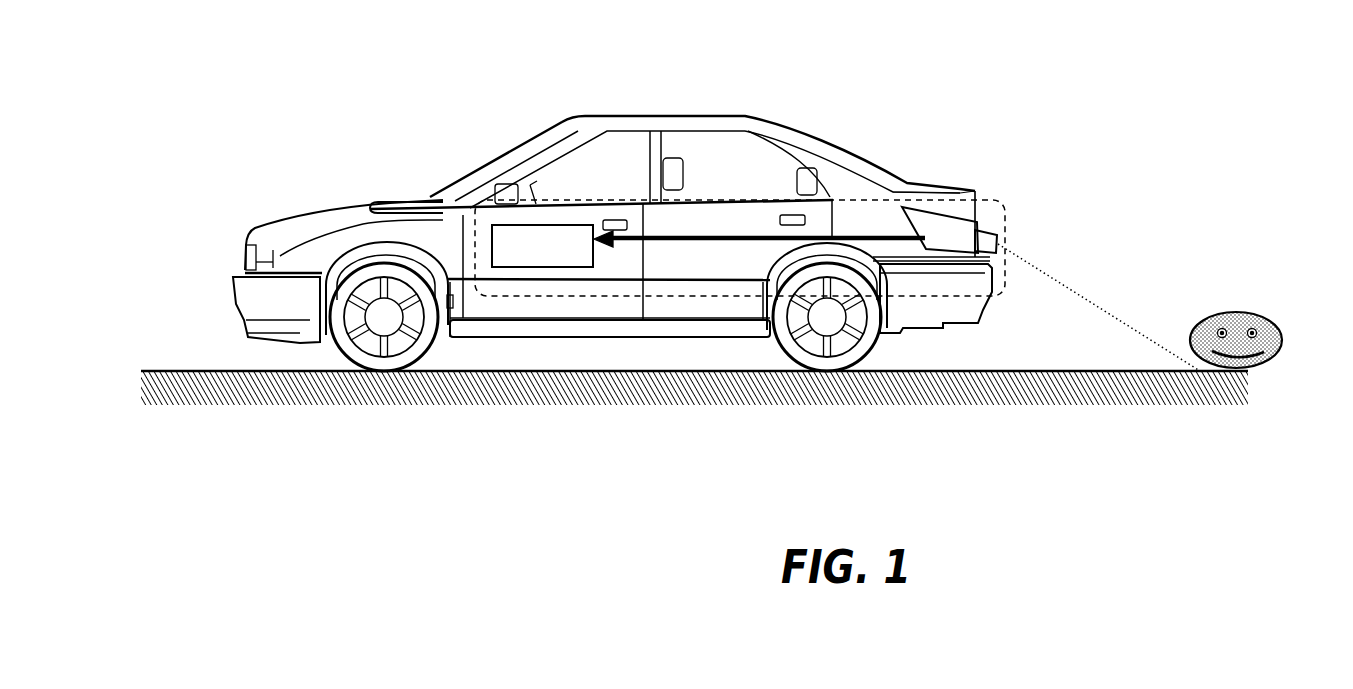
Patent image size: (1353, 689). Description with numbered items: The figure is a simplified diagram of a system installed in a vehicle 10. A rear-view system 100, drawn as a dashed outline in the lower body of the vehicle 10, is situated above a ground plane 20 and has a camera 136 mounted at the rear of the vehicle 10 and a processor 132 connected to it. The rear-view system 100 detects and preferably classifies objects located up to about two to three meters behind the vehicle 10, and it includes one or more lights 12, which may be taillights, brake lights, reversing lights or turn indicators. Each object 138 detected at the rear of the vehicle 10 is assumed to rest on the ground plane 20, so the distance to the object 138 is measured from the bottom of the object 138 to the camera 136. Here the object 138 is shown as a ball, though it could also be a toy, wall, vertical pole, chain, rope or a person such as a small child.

The vehicle 10 is at (856, 147).
The lights 12 is at (990, 212).
The ground plane 20 is at (921, 367).
The rear-view system 100 is at (531, 296).
The processor 132 is at (708, 246).
The camera 136 is at (1051, 289).
The object 138 is at (1233, 313).